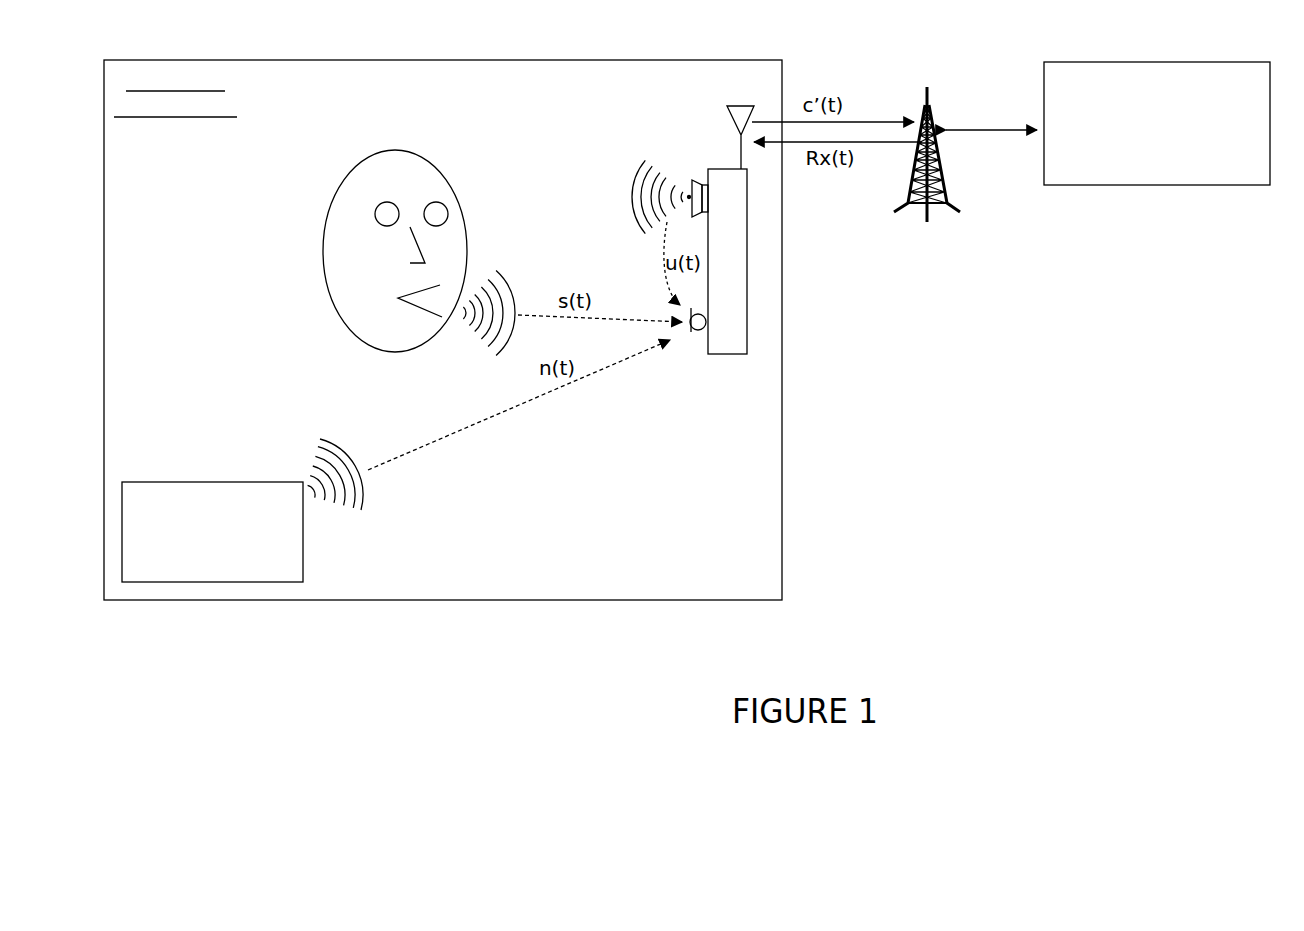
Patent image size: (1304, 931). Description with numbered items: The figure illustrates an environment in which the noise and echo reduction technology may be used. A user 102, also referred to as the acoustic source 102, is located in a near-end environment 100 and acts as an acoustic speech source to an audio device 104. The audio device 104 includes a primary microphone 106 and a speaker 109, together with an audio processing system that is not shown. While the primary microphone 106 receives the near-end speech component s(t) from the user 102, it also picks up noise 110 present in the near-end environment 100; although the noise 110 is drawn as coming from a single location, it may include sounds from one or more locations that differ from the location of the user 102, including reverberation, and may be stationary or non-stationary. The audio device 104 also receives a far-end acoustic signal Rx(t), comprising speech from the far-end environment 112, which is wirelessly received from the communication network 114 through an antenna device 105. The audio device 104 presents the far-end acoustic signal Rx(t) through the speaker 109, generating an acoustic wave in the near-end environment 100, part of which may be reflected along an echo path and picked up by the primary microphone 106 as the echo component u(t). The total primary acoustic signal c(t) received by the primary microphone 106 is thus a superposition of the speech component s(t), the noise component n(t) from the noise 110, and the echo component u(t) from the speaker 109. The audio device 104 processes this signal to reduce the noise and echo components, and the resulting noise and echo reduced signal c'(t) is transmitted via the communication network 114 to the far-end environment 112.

The near-end environment 100 is at (197, 144).
The user 102 is at (419, 223).
The audio device 104 is at (722, 355).
The antenna device 105 is at (741, 106).
The primary microphone 106 is at (694, 331).
The speaker 109 is at (698, 185).
The noise 110 is at (242, 510).
The far-end environment 112 is at (1138, 147).
The communication network 114 is at (927, 228).